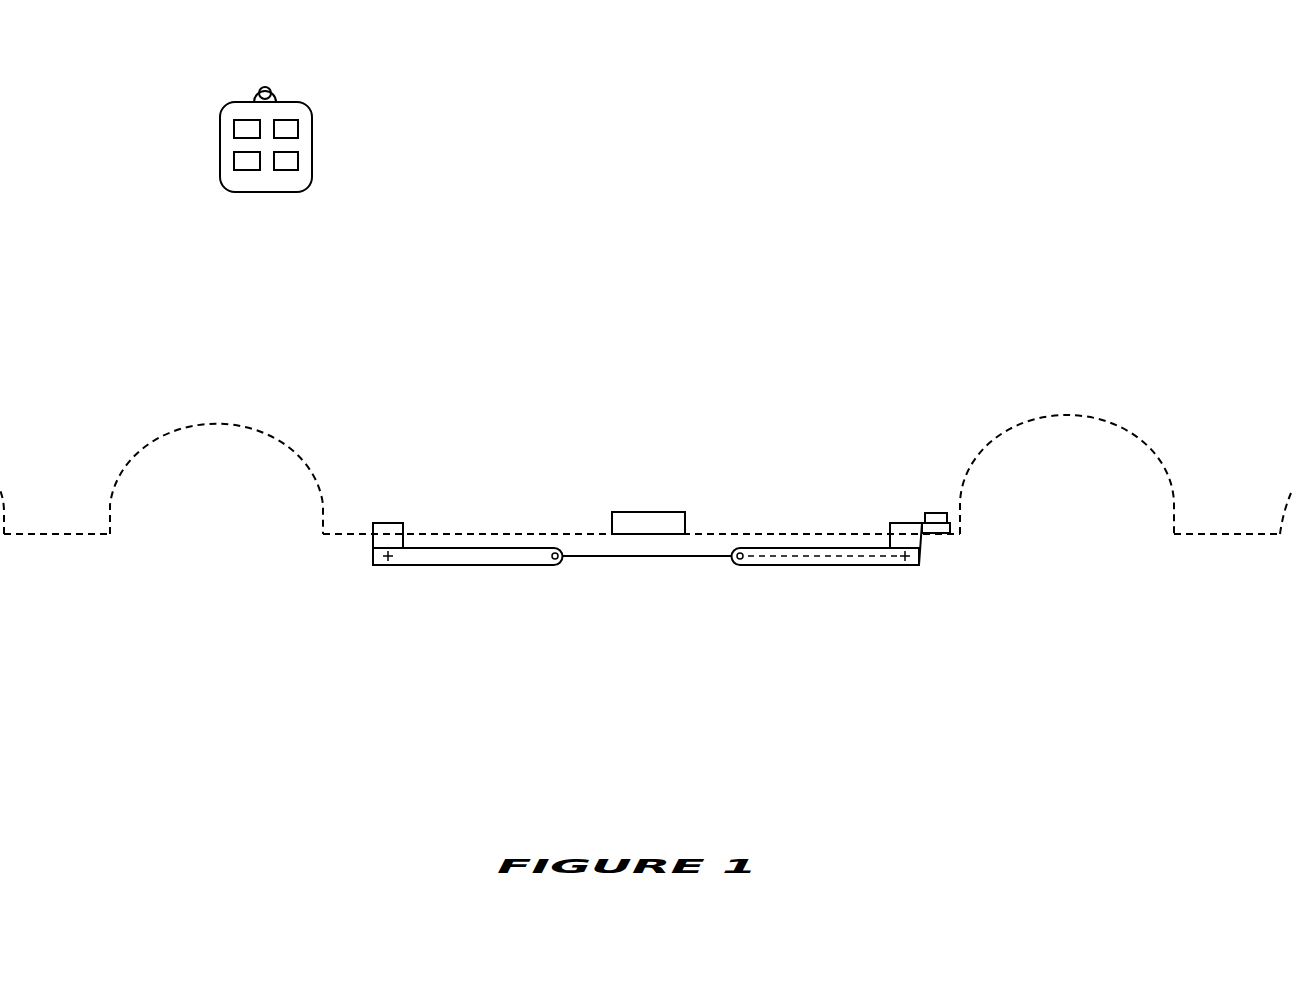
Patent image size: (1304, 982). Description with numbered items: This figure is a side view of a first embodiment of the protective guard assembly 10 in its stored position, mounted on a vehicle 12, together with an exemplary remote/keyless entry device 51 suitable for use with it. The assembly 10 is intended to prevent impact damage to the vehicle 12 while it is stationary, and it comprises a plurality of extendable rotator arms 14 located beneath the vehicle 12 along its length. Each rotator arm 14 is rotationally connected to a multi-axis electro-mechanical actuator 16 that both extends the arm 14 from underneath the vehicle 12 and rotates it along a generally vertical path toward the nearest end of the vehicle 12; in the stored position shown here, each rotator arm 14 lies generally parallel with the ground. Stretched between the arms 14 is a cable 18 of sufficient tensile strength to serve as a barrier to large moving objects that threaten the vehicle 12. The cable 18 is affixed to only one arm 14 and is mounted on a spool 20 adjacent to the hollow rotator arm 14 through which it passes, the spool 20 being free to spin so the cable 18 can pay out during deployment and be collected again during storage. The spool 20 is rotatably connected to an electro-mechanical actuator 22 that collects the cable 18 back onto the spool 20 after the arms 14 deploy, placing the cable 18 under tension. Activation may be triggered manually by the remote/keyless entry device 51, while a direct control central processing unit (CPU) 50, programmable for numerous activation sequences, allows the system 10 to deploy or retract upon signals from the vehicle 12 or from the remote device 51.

The protective guard assembly 10 is at (693, 365).
The vehicle 12 is at (38, 456).
The rotator arm 14 is at (453, 565).
The multi-axis electro-mechanical actuator 16 is at (388, 523).
The cable 18 is at (644, 556).
The spool 20 is at (932, 513).
The electro-mechanical actuator 22 is at (940, 533).
The direct control central processing unit (CPU) 50 is at (637, 519).
The remote/keyless entry device 51 is at (307, 148).